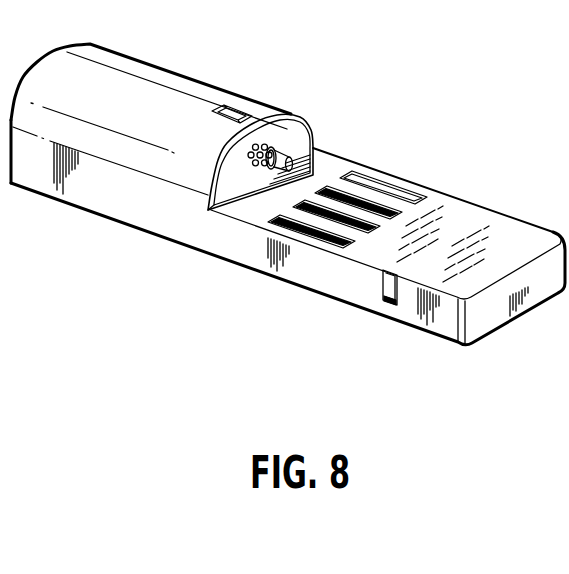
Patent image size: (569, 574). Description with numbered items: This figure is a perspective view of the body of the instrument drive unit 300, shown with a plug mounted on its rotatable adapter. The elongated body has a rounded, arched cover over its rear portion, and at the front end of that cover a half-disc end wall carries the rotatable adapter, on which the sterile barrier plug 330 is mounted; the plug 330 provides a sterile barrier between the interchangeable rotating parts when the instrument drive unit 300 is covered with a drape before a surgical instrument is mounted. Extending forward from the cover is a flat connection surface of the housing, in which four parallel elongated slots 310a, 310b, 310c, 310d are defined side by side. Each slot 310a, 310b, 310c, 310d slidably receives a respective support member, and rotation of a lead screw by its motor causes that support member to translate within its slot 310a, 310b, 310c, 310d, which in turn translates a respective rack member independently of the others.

The instrument drive unit 300 is at (318, 124).
The sterile barrier plug 330 is at (285, 155).
The slot 310a is at (267, 224).
The slot 310b is at (293, 208).
The slot 310c is at (323, 186).
The slot 310d is at (355, 170).